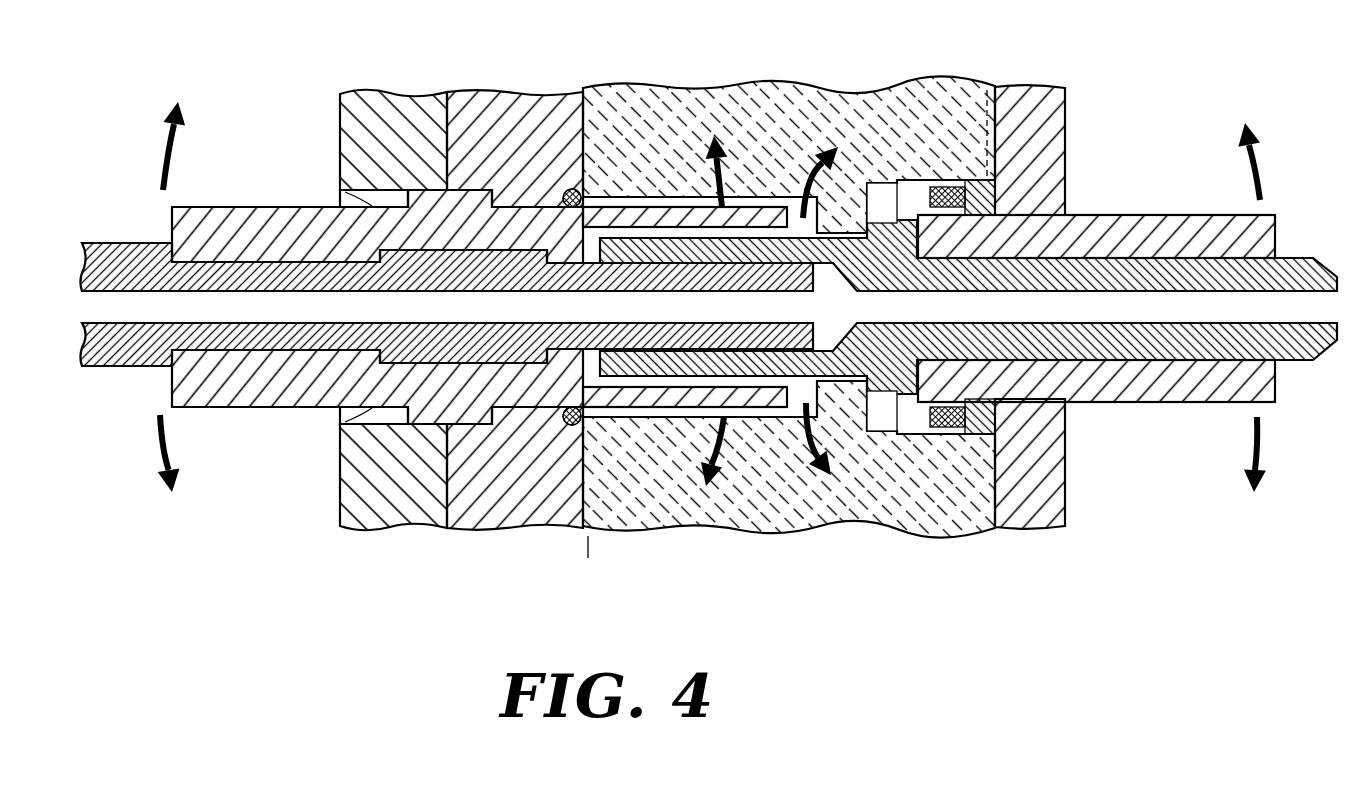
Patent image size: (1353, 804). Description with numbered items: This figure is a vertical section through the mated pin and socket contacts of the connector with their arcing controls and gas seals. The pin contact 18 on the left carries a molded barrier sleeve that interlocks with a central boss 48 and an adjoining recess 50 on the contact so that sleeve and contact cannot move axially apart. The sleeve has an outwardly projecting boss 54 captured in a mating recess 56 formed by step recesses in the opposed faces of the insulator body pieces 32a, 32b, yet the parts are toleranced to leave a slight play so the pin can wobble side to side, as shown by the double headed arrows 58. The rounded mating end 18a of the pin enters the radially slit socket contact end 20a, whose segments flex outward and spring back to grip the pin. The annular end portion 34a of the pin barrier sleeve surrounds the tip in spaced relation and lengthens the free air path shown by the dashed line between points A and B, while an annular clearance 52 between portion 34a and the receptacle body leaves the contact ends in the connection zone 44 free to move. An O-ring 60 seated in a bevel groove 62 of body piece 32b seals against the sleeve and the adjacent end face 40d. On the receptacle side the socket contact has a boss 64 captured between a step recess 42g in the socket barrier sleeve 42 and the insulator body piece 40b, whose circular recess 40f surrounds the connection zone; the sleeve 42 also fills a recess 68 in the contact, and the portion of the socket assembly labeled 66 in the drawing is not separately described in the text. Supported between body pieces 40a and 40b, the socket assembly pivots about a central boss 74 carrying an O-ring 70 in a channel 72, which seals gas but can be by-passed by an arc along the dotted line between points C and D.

The pin contact 18 is at (245, 222).
The mating end of the pin contact 18a is at (790, 200).
The socket contact end 20a is at (773, 288).
The insulator body piece 32a is at (427, 92).
The insulator body piece 32b is at (473, 93).
The end portion of the barrier sleeve 34a is at (625, 245).
The insulator body piece 40a is at (1030, 524).
The insulator body piece 40b is at (832, 110).
The end face 40d is at (580, 440).
The circular recess 40f is at (668, 195).
The socket barrier sleeve 42 is at (1098, 228).
The step recess 42g is at (925, 185).
The connection zone 44 is at (647, 477).
The central boss 48 is at (328, 395).
The recess 50 is at (172, 385).
The annular clearance 52 is at (598, 212).
The boss 54 is at (416, 105).
The recess 56 is at (345, 200).
The double headed arrows 58 is at (160, 157).
The O-ring 60 is at (566, 190).
The bevel groove 62 is at (564, 425).
The boss 64 is at (850, 215).
The flange 66 is at (965, 240).
The recess 68 is at (1268, 236).
The O-ring 70 is at (962, 517).
The channel 72 is at (945, 185).
The central boss 74 is at (870, 437).
The point A is at (595, 549).
The point B is at (805, 394).
The point C is at (879, 214).
The point D is at (979, 126).